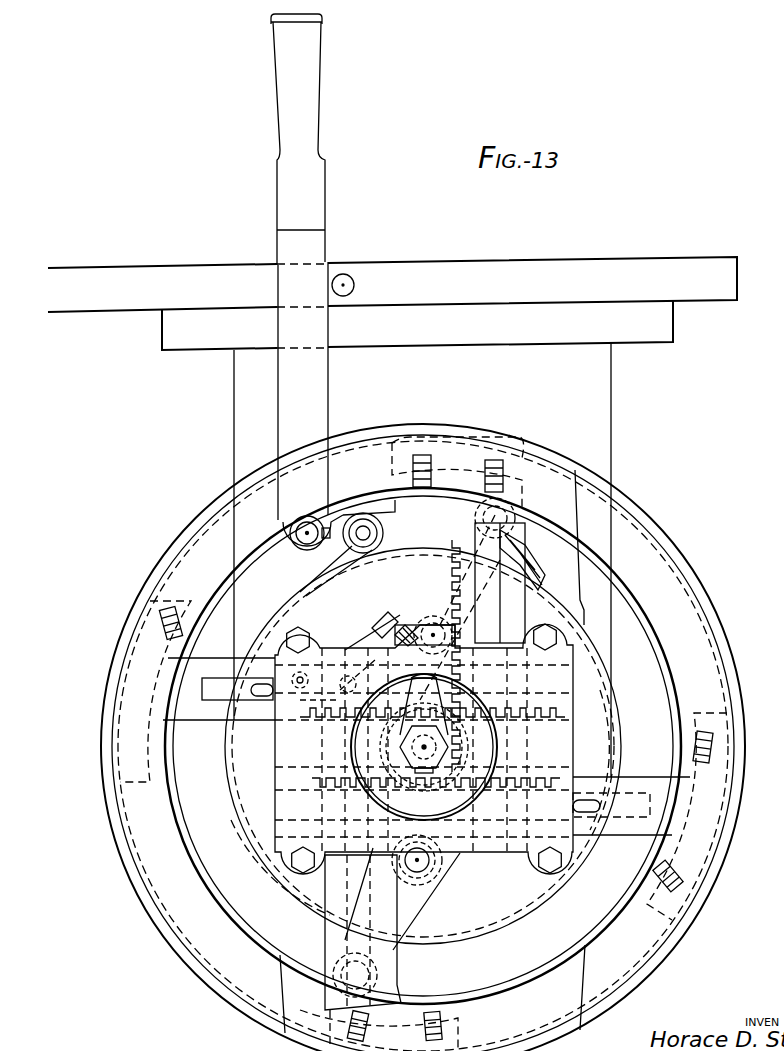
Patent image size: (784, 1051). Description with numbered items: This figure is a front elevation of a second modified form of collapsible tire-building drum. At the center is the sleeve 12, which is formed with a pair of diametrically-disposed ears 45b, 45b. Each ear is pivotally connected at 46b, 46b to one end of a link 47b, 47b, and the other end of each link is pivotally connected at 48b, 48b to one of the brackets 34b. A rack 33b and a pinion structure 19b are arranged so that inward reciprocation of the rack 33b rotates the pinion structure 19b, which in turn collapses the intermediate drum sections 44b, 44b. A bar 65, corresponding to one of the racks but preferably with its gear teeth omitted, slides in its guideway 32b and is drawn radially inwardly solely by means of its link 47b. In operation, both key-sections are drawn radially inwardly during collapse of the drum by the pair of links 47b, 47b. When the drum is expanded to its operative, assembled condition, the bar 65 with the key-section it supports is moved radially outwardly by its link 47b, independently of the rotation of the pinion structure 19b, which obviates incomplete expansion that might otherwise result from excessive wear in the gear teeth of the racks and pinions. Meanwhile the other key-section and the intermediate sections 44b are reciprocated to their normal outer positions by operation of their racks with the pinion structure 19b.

The sleeve 12 is at (500, 752).
The pinion structure 19b is at (512, 790).
The guideway 32b is at (251, 833).
The rack 33b is at (440, 620).
The bracket 34b is at (400, 473).
The intermediate drum section 44b is at (130, 858).
The ear 45b is at (496, 624).
The pivotal connection 46b is at (404, 614).
The link 47b is at (424, 600).
The pivotal connection 48b is at (522, 550).
The bar 65 is at (333, 890).